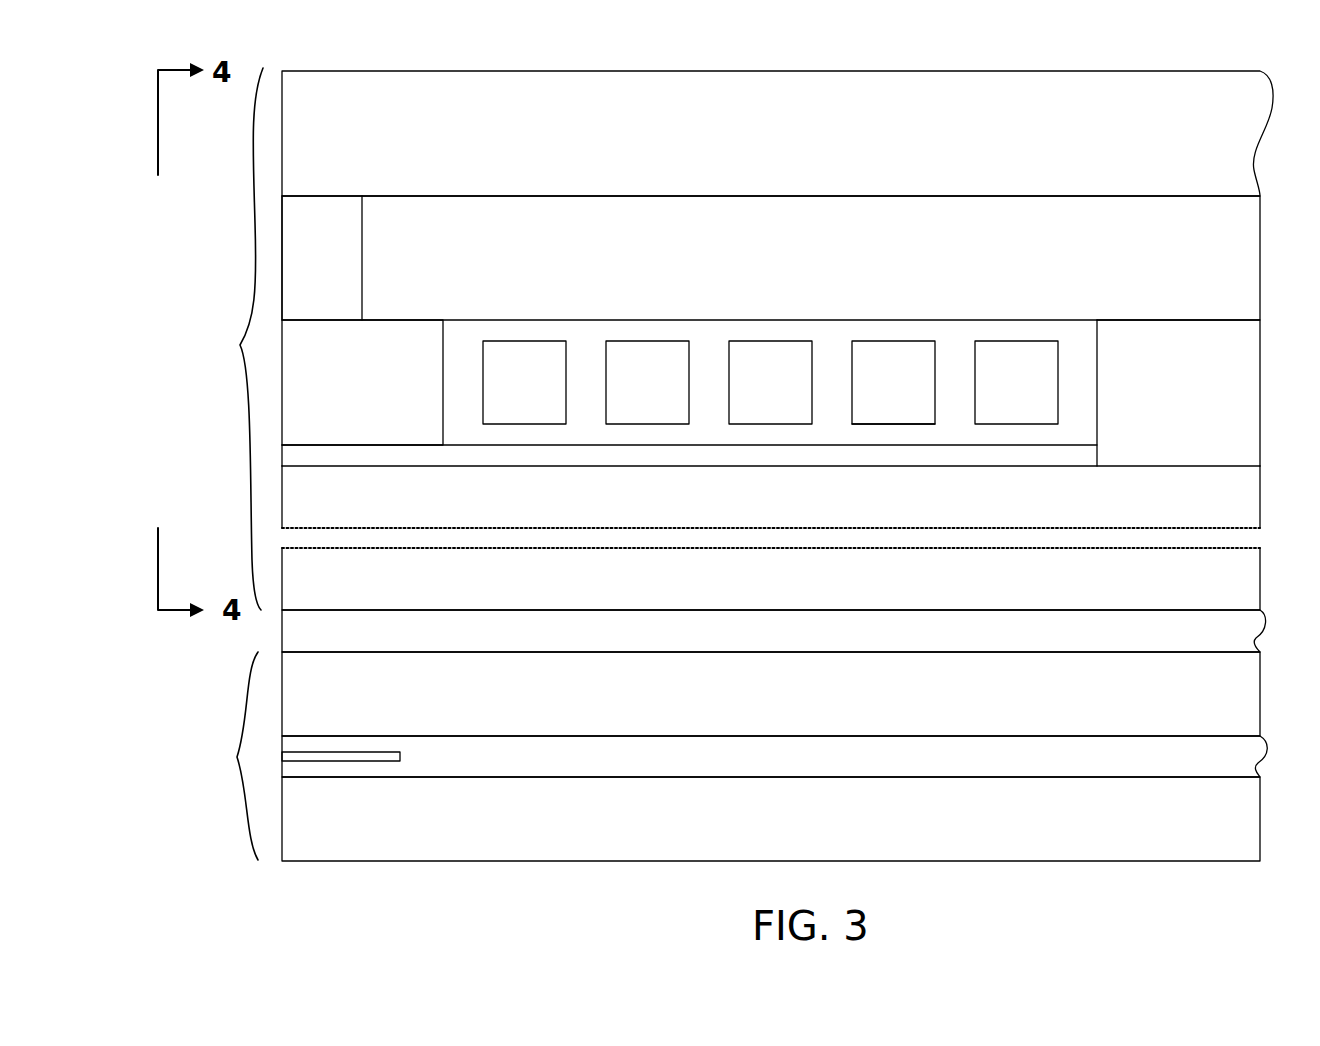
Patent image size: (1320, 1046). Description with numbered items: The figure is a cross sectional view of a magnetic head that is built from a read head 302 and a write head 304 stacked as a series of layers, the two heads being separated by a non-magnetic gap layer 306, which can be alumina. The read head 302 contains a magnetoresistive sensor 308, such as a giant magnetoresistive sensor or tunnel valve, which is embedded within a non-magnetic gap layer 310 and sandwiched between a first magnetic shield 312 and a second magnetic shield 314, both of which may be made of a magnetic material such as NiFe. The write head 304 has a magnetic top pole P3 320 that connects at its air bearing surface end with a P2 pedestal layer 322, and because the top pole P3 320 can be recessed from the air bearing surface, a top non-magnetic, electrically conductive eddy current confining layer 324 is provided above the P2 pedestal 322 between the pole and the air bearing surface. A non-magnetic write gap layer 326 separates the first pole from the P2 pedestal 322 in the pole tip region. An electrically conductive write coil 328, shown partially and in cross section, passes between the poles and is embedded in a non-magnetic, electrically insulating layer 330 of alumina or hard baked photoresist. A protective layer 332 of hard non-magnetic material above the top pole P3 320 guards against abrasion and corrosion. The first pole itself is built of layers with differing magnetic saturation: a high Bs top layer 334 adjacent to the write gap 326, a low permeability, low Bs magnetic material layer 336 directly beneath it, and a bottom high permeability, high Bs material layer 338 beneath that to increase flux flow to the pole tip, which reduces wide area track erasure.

The read head 302 is at (250, 684).
The write head 304 is at (255, 223).
The non-magnetic gap layer 306 is at (828, 628).
The magnetoresistive sensor 308 is at (400, 756).
The non-magnetic gap layer 310 is at (830, 756).
The first magnetic shield 312 is at (830, 816).
The second magnetic shield 314 is at (830, 691).
The top pole P3 320 is at (832, 258).
The P2 pedestal layer 322 is at (412, 380).
The top eddy current confining layer 324 is at (327, 258).
The non-magnetic write gap layer 326 is at (575, 455).
The write coil 328 is at (906, 442).
The insulating layer 330 is at (708, 424).
The protective layer 332 is at (840, 131).
The high Bs top layer 334 is at (830, 494).
The low Bs magnetic material layer 336 is at (937, 538).
The bottom high Bs material layer 338 is at (830, 577).